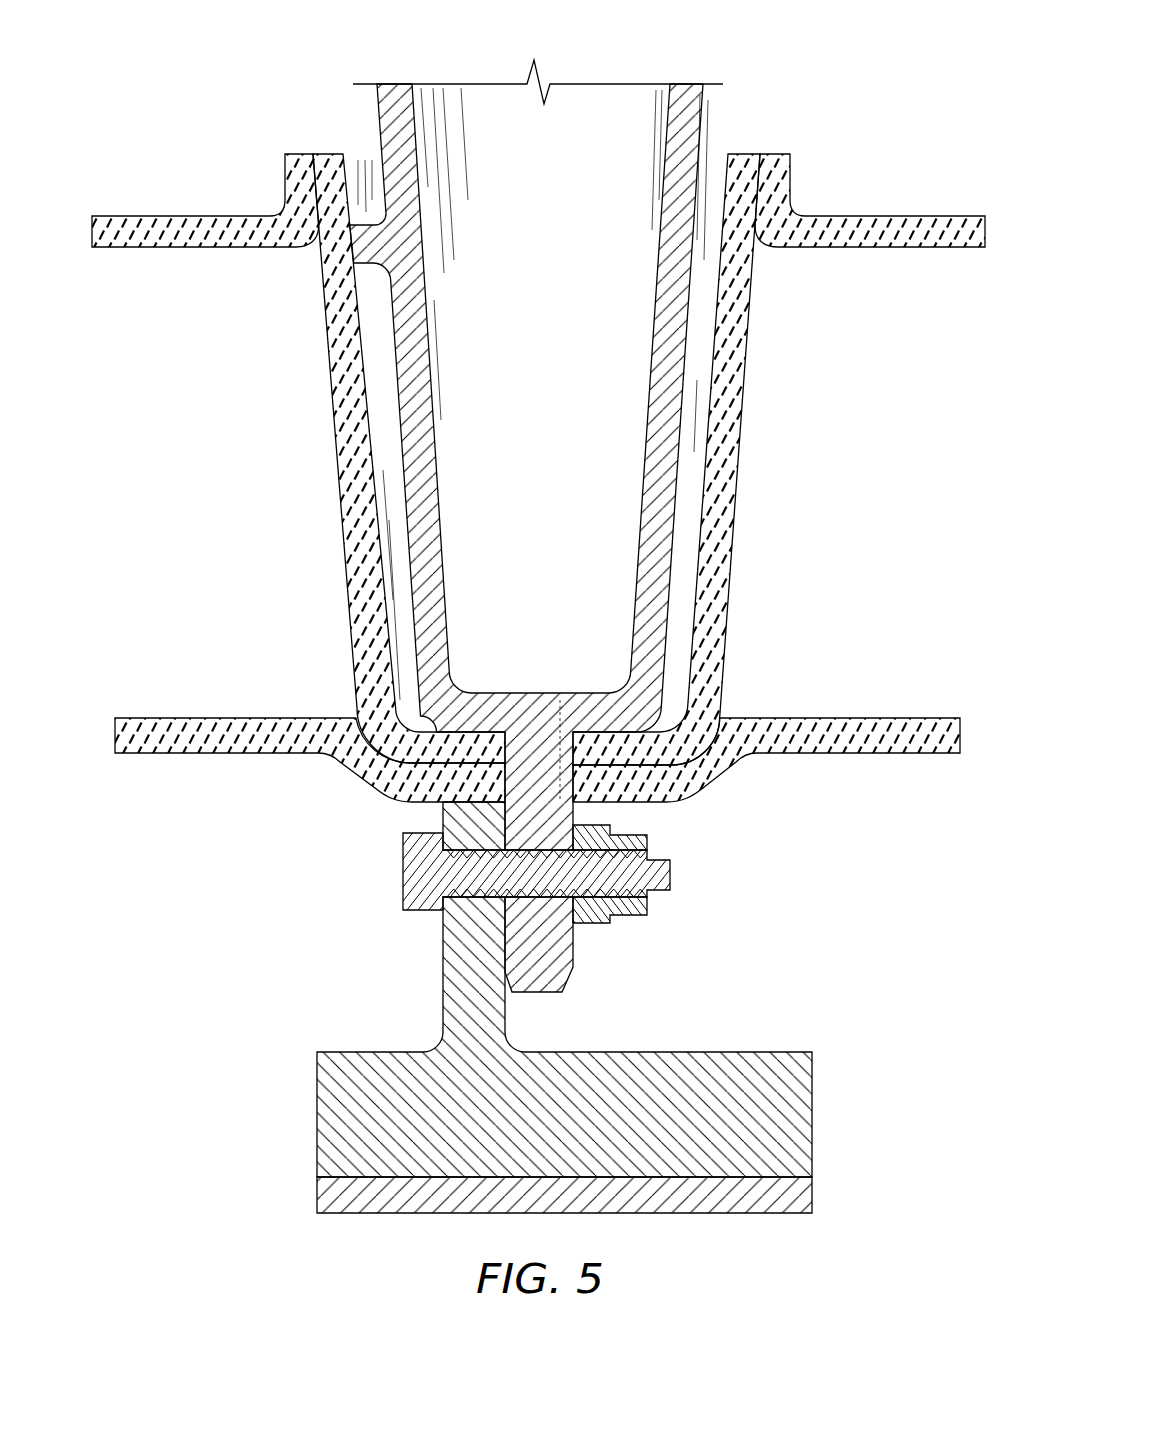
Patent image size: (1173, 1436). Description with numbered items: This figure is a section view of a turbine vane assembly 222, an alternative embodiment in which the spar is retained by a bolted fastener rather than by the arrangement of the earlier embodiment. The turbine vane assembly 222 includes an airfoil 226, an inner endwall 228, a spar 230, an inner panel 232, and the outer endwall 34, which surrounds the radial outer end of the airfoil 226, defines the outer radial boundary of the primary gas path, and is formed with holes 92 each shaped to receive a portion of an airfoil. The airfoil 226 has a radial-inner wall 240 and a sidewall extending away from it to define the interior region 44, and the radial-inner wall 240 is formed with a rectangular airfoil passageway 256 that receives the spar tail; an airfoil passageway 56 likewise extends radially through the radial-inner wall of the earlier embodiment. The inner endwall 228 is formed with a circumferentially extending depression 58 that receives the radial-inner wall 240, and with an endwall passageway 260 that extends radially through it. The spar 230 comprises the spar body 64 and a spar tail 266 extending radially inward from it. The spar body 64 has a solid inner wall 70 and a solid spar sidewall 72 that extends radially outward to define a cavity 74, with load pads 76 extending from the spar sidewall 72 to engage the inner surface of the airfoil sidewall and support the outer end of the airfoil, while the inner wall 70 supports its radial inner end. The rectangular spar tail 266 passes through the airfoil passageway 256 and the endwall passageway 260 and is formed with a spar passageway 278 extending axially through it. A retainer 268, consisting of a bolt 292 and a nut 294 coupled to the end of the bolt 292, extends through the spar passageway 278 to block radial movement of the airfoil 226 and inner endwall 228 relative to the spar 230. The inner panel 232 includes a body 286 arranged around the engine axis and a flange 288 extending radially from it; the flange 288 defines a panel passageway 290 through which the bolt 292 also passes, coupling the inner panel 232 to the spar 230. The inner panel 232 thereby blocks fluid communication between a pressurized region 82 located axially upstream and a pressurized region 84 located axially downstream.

The turbine vane assembly 222 is at (172, 58).
The outer endwall 34 is at (167, 215).
The interior region 44 is at (712, 188).
The airfoil passageway 56 is at (353, 153).
The depression 58 is at (654, 743).
The spar body 64 is at (674, 523).
The inner wall 70 is at (535, 691).
The spar sidewall 72 is at (437, 462).
The cavity 74 is at (654, 106).
The load pads 76 is at (366, 270).
The pressurized region 82 is at (150, 1090).
The pressurized region 84 is at (908, 1010).
The holes 92 is at (317, 230).
The airfoil 226 is at (341, 516).
The inner endwall 228 is at (201, 716).
The spar 230 is at (679, 481).
The inner panel 232 is at (331, 1049).
The radial-inner wall 240 is at (658, 702).
The airfoil passageway 256 is at (516, 733).
The endwall passageway 260 is at (559, 775).
The spar tail 266 is at (578, 963).
The retainer 268 is at (400, 869).
The spar passageway 278 is at (578, 898).
The body 286 is at (311, 1152).
The flange 288 is at (509, 1010).
The panel passageway 290 is at (442, 850).
The bolt 292 is at (412, 913).
The nut 294 is at (656, 835).